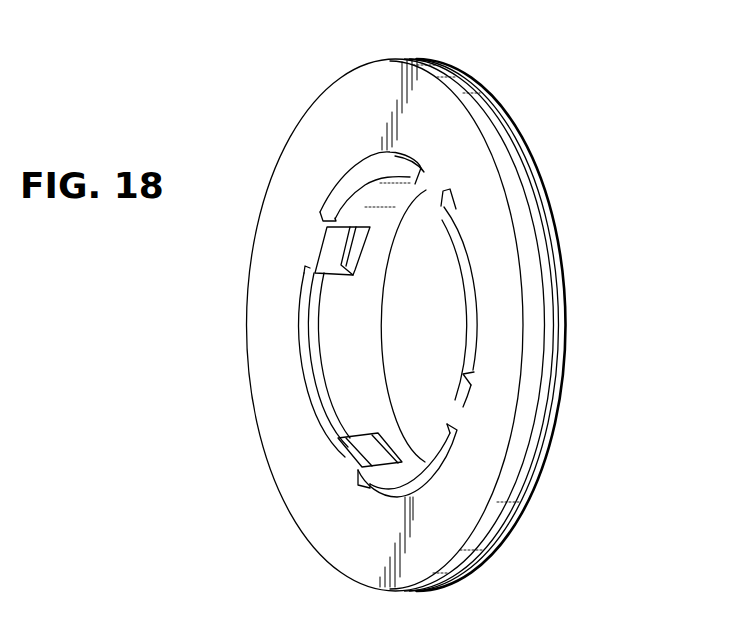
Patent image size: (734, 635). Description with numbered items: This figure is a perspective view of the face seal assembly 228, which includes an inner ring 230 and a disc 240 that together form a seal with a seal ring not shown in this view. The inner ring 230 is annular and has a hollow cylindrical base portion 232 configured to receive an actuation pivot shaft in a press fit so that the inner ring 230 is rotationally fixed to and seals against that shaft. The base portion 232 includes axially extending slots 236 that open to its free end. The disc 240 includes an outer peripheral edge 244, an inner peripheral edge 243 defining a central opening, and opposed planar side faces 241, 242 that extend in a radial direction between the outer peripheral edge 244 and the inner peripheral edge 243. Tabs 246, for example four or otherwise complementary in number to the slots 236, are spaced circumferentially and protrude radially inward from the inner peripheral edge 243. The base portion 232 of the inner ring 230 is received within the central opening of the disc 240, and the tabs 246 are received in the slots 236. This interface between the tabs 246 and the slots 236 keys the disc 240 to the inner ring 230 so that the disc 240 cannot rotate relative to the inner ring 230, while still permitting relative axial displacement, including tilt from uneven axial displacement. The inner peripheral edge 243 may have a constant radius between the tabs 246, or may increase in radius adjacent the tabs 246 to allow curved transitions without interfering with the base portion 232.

The face seal assembly 228 is at (559, 73).
The disc 240 is at (291, 98).
The planar side face 241 is at (378, 92).
The outer peripheral edge 244 is at (505, 148).
The planar side face 242 is at (561, 262).
The inner ring 230 is at (380, 337).
The base portion 232 is at (357, 377).
The inner peripheral edge 243 is at (333, 178).
The slots 236 is at (385, 447).
The tabs 246 is at (306, 239).